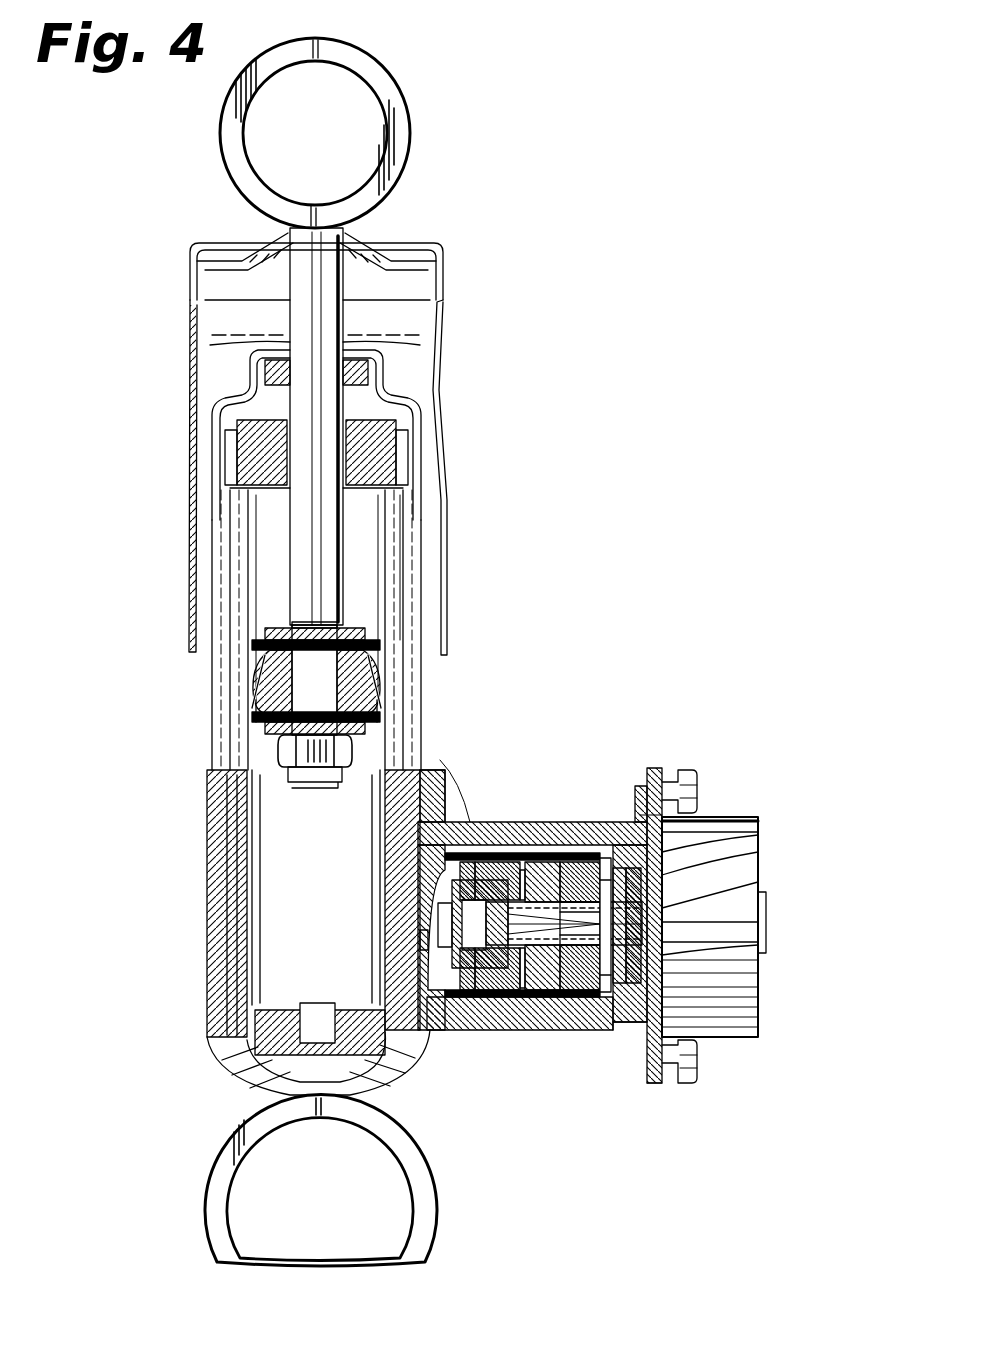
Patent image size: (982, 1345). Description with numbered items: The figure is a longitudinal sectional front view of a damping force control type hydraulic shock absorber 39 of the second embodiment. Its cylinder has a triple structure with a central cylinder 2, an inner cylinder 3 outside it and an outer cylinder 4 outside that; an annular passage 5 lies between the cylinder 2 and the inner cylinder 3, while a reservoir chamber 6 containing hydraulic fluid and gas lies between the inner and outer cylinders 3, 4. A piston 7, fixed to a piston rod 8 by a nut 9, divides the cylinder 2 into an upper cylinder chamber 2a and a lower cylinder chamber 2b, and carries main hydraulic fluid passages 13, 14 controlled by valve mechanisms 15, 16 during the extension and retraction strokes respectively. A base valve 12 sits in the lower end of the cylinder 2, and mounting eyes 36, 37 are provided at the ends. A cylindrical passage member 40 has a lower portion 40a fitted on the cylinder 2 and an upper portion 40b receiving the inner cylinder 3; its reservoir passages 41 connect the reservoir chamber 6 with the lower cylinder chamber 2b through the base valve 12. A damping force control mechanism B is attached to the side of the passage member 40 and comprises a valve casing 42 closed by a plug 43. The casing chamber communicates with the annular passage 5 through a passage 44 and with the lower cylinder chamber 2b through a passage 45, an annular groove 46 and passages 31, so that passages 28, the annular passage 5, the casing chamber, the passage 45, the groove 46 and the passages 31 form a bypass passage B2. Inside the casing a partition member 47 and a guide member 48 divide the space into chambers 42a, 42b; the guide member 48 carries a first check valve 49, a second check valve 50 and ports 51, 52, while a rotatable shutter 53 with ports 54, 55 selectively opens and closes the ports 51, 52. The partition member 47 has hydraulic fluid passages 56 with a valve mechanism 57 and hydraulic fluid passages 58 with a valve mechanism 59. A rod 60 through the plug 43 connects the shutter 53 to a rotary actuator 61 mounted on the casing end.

The central cylinder 2 is at (412, 520).
The upper cylinder chamber 2a is at (256, 548).
The lower cylinder chamber 2b is at (250, 1003).
The inner cylinder 3 is at (412, 545).
The outer cylinder 4 is at (412, 570).
The annular passage 5 is at (405, 600).
The reservoir chamber 6 is at (222, 593).
The piston 7 is at (258, 684).
The piston rod 8 is at (297, 337).
The nut 9 is at (283, 752).
The base valve 12 is at (292, 1077).
The main hydraulic fluid passage 13 is at (412, 620).
The main hydraulic fluid passage 14 is at (250, 718).
The valve mechanism 15 is at (420, 692).
The valve mechanism 16 is at (265, 634).
The passages 28 is at (238, 498).
The passages 31 is at (390, 945).
The mounting eye 36 is at (382, 96).
The mounting eye 37 is at (430, 1206).
The damping force control type hydraulic shock absorber 39 is at (545, 114).
The passage member 40 is at (201, 866).
The lower portion 40a is at (246, 908).
The upper portion 40b is at (256, 845).
The reservoir passages 41 is at (246, 960).
The valve casing 42 is at (505, 828).
The chamber 42a is at (662, 815).
The chamber 42b is at (512, 832).
The plug 43 is at (756, 975).
The passage 44 is at (540, 832).
The passage 45 is at (398, 903).
The annular groove 46 is at (386, 958).
The partition member 47 is at (530, 832).
The guide member 48 is at (566, 1035).
The first check valve 49 is at (742, 828).
The second check valve 50 is at (588, 842).
The ports 51 is at (666, 822).
The ports 52 is at (610, 835).
The shutter 53 is at (592, 1035).
The ports 54 is at (742, 850).
The ports 55 is at (622, 830).
The hydraulic fluid passages 56 is at (605, 838).
The valve mechanism 57 is at (430, 790).
The hydraulic fluid passages 58 is at (518, 830).
The valve mechanism 59 is at (580, 838).
The rod 60 is at (745, 898).
The rotary actuator 61 is at (742, 904).
The damping force control mechanism B is at (689, 1108).
The bypass passage B2 is at (410, 732).